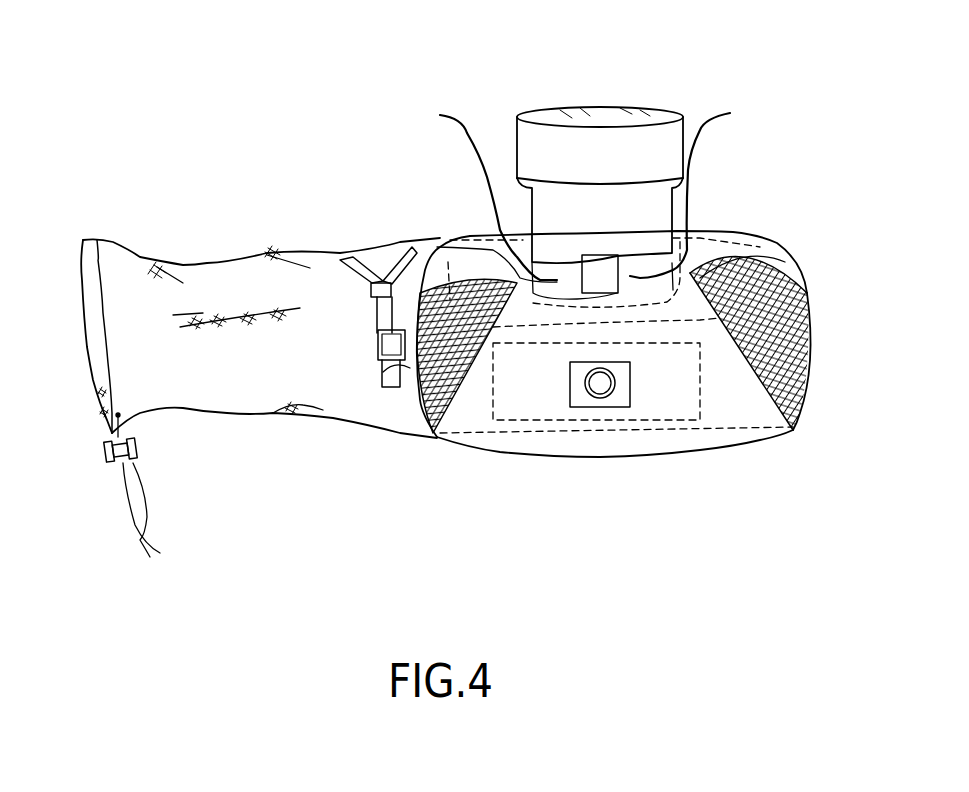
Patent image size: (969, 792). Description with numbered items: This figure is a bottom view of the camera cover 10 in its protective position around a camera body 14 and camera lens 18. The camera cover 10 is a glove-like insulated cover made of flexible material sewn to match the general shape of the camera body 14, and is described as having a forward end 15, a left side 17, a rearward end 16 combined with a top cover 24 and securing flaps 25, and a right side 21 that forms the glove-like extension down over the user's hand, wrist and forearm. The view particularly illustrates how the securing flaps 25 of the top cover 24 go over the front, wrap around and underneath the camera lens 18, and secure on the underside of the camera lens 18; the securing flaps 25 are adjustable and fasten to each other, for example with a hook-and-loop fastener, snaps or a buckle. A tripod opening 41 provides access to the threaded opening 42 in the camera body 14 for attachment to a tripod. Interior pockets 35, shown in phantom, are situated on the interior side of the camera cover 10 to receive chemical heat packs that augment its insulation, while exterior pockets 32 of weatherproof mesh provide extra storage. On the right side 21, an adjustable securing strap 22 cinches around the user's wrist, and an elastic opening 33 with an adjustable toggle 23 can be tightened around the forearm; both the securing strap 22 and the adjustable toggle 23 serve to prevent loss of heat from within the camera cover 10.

The camera cover 10 is at (327, 200).
The camera body 14 is at (708, 237).
The forward end 15 is at (777, 260).
The rearward end 16 is at (478, 450).
The left side 17 is at (810, 317).
The camera lens 18 is at (683, 115).
The right side 21 is at (207, 263).
The securing strap 22 is at (400, 247).
The adjustable toggle 23 is at (105, 445).
The top cover 24 is at (477, 237).
The securing flaps 25 is at (585, 194).
The exterior pockets 32 is at (460, 353).
The elastic opening 33 is at (93, 303).
The interior pockets 35 is at (680, 387).
The tripod opening 41 is at (580, 407).
The threaded opening 42 is at (617, 400).